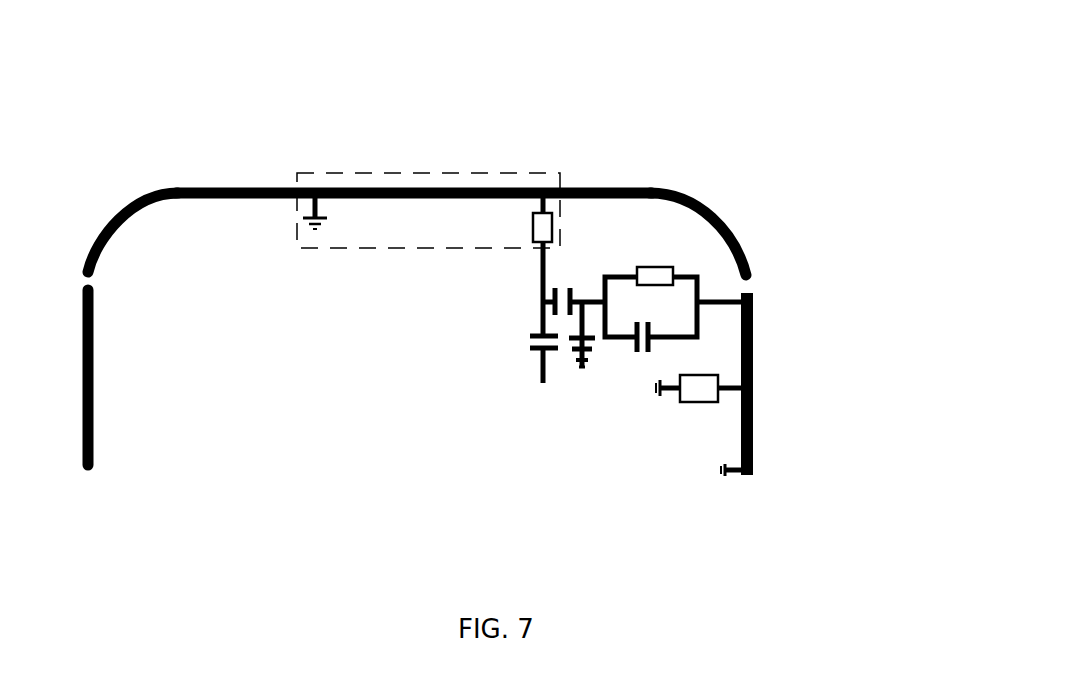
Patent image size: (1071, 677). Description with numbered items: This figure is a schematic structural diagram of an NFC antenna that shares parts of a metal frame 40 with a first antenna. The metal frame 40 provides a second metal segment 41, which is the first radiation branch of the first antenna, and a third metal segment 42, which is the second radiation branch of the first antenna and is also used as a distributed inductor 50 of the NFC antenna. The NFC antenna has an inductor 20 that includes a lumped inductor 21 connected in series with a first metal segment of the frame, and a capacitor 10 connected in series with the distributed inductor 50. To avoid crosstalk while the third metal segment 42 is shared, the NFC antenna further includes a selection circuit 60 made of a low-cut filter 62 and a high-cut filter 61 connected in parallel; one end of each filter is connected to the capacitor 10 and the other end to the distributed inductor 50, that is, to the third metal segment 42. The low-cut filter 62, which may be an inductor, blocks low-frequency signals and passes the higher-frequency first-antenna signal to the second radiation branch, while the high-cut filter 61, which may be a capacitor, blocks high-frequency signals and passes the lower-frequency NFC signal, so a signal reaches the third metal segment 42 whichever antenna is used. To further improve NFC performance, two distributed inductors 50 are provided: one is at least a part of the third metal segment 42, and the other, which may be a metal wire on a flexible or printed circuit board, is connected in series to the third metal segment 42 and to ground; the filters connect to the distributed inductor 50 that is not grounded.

The metal frame 40 is at (166, 140).
The inductor 20 is at (428, 173).
The second metal segment 41 is at (533, 178).
The capacitor 10 is at (545, 318).
The lumped inductor 21 is at (531, 227).
The selection circuit 60 is at (652, 271).
The high-cut filter 61 is at (650, 266).
The low-cut filter 62 is at (632, 343).
The third metal segment 42 is at (753, 392).
The distributed inductor 50 is at (755, 308).